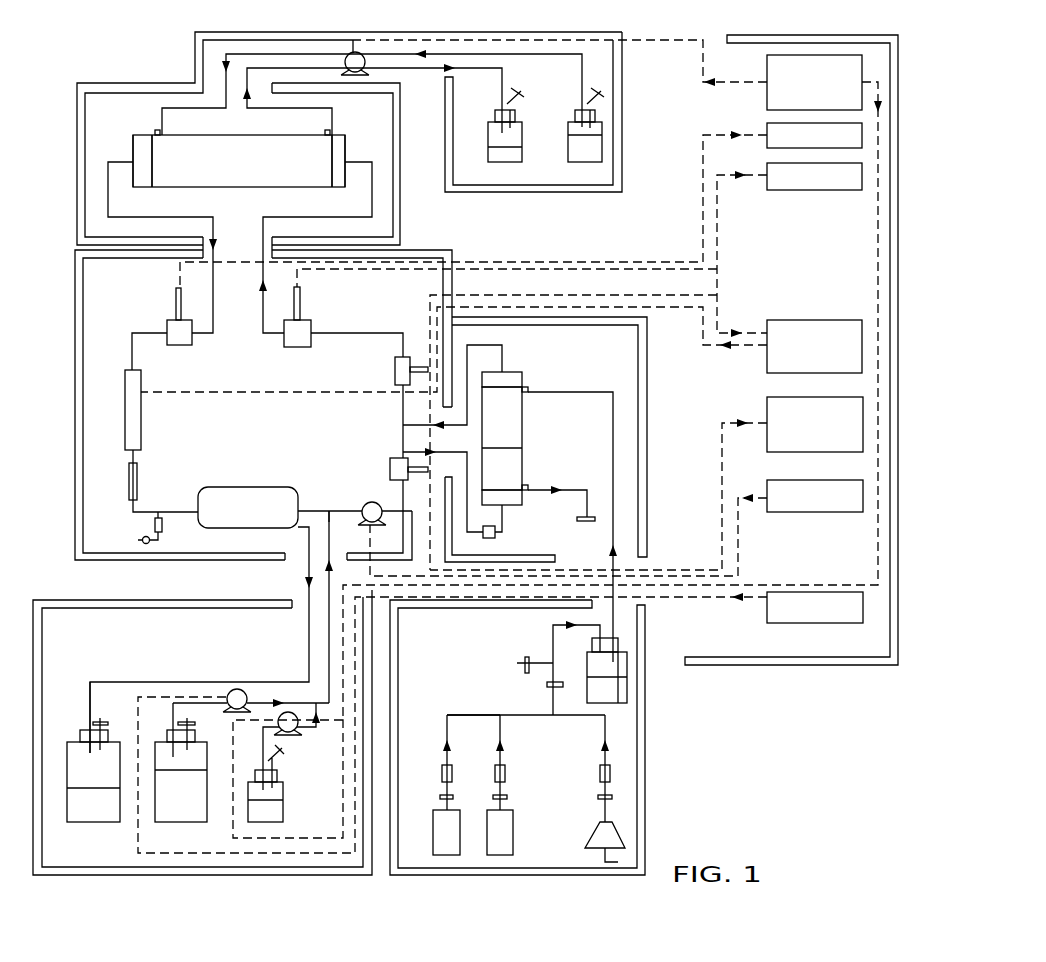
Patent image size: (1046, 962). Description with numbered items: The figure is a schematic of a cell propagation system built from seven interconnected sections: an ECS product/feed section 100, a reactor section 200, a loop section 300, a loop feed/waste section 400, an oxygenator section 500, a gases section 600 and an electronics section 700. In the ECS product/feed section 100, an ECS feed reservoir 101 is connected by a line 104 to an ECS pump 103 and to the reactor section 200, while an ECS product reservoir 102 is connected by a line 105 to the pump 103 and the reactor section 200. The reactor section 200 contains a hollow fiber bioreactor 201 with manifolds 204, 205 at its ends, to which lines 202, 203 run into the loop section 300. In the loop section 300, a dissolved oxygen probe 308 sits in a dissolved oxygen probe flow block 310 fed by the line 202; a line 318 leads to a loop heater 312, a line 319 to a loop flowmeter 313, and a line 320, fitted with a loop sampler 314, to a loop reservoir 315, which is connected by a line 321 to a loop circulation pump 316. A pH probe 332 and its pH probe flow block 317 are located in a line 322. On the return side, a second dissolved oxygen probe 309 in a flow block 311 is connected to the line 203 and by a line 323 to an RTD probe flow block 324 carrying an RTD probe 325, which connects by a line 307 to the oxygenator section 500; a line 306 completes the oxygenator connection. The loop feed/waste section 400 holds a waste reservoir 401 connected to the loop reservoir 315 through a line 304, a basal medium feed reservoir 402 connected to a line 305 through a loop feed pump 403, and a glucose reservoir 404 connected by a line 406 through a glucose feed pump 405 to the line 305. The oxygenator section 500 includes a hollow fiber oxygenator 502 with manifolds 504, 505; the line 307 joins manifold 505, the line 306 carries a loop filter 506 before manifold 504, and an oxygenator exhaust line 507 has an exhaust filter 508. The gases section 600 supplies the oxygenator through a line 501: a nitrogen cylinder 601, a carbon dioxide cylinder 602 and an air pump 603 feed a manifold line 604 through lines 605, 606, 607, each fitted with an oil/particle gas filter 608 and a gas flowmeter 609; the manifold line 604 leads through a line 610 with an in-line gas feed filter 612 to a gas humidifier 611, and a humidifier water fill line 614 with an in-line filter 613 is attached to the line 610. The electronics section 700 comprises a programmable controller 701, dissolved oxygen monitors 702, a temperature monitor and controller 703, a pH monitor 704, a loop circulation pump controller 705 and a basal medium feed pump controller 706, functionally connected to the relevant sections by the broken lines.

The ECS product/feed section 100 is at (547, 192).
The ECS feed reservoir 101 is at (568, 137).
The ECS product reservoir 102 is at (488, 147).
The ECS pump 103 is at (365, 64).
The line 104 is at (287, 54).
The line 105 is at (307, 68).
The reactor section 200 is at (120, 82).
The hollow fiber bioreactor 201 is at (217, 172).
The line 202 is at (163, 217).
The line 203 is at (298, 215).
The manifold 204 is at (135, 143).
The manifold 205 is at (347, 143).
The loop section 300 is at (117, 260).
The line 304 is at (308, 550).
The line 305 is at (359, 527).
The line 306 is at (403, 450).
The line 307 is at (403, 425).
The dissolved oxygen probe 308 is at (176, 313).
The dissolved oxygen probe 309 is at (300, 315).
The dissolved oxygen probe flow block 310 is at (178, 345).
The dissolved oxygen probe flow block 311 is at (300, 347).
The loop heater 312 is at (125, 428).
The loop flowmeter 313 is at (129, 492).
The loop sampler 314 is at (163, 528).
The loop reservoir 315 is at (224, 522).
The loop circulation pump 316 is at (358, 509).
The pH probe flow block 317 is at (390, 468).
The line 318 is at (132, 352).
The line 319 is at (135, 456).
The line 320 is at (167, 511).
The line 321 is at (333, 509).
The line 322 is at (403, 495).
The line 323 is at (375, 332).
The resistance temperature detector probe flow block 324 is at (395, 376).
The RTD probe 325 is at (415, 367).
The pH probe 332 is at (437, 452).
The loop feed/waste section 400 is at (125, 610).
The waste reservoir 401 is at (77, 817).
The basal medium feed reservoir 402 is at (190, 813).
The loop feed pump 403 is at (245, 692).
The glucose reservoir 404 is at (278, 812).
The glucose feed pump 405 is at (291, 738).
The line 406 is at (285, 757).
The oxygenator section 500 is at (557, 325).
The line 501 is at (571, 394).
The hollow fiber oxygenator 502 is at (502, 438).
The manifold 504 is at (510, 505).
The manifold 505 is at (522, 372).
The loop filter 506 is at (495, 537).
The oxygenator exhaust line 507 is at (577, 490).
The exhaust filter 508 is at (585, 531).
The gases section 600 is at (465, 608).
The cylinder 601 is at (513, 848).
The cylinder 602 is at (433, 855).
The air pump 603 is at (598, 831).
The manifold line 604 is at (465, 712).
The line 605 is at (505, 716).
The line 606 is at (445, 731).
The line 607 is at (602, 733).
The oil/particle gas filter 608 is at (493, 795).
The gas flowmeter 609 is at (495, 767).
The line 610 is at (551, 633).
The gas humidifier 611 is at (615, 694).
The in-line gas feed filter 612 is at (546, 685).
The in-line filter 613 is at (525, 657).
The humidifier water fill line 614 is at (540, 665).
The electronics section 700 is at (770, 668).
The programmable controller 701 is at (797, 94).
The dissolved oxygen monitors 702 is at (797, 147).
The temperature monitor and controller 703 is at (797, 358).
The pH monitor 704 is at (797, 436).
The loop circulation pump controller 705 is at (797, 509).
The basal medium feed pump controller 706 is at (500, 722).